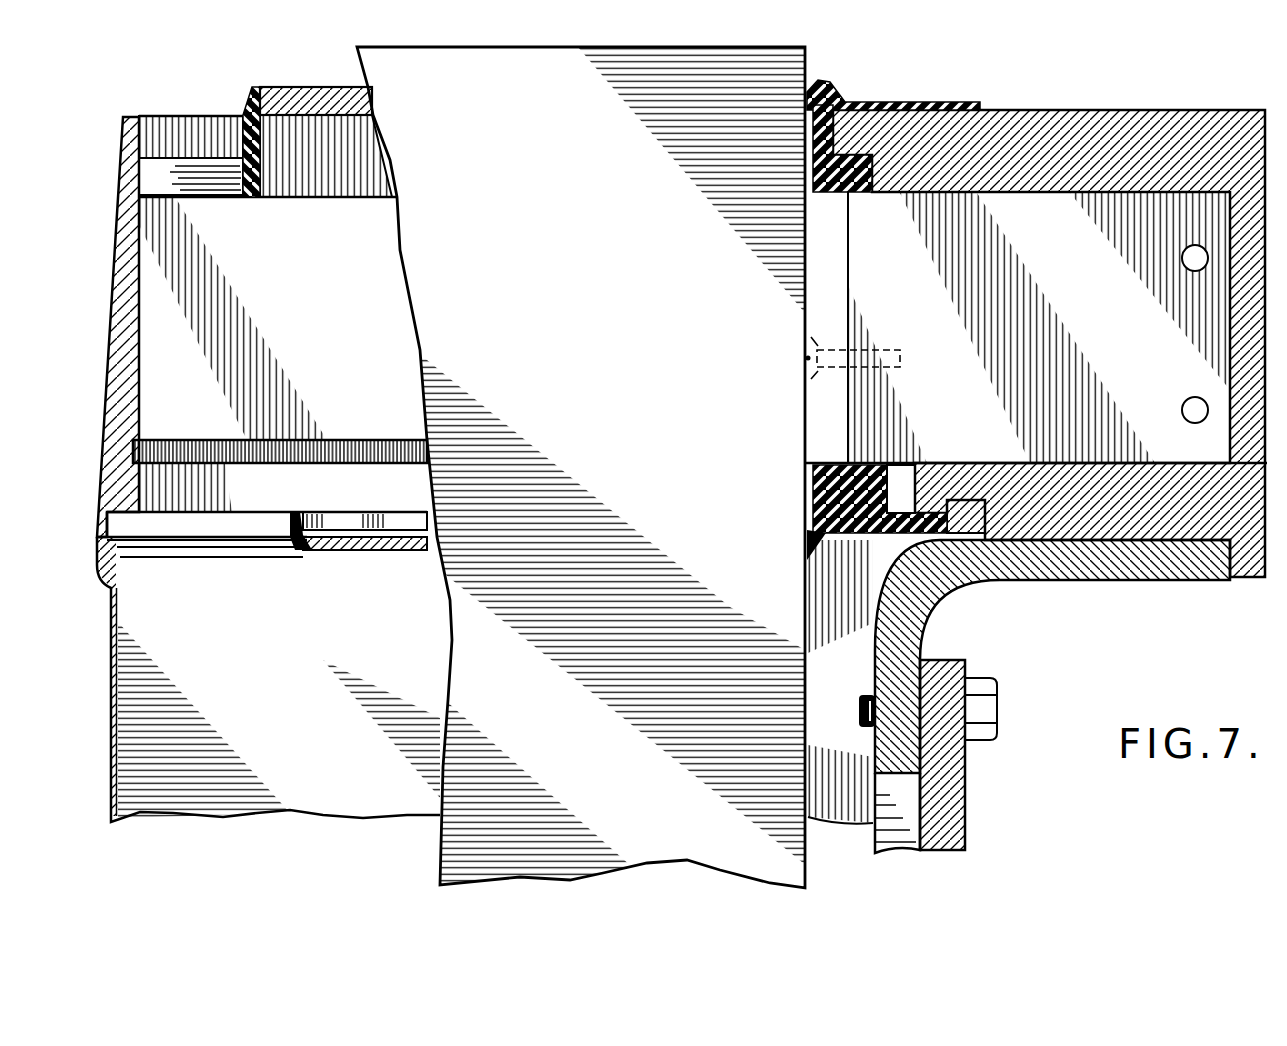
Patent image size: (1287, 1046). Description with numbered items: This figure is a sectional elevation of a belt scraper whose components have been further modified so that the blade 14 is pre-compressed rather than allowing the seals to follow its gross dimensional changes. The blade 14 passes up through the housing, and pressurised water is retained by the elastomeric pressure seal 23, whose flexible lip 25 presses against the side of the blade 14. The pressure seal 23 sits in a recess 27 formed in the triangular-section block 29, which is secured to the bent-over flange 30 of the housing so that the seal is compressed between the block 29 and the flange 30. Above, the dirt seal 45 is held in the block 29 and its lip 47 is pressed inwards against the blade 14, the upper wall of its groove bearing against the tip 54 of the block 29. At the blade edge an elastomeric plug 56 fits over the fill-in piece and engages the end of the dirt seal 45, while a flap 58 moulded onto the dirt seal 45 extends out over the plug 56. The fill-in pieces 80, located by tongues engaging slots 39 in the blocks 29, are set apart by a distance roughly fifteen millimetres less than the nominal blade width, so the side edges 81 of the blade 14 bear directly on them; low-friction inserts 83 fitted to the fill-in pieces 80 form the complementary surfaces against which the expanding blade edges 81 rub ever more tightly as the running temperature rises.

The blade 14 is at (673, 360).
The pressure seal 23 is at (415, 550).
The flexible lip 25 is at (352, 552).
The recess 27 is at (203, 524).
The block 29 is at (369, 308).
The bent-over flange 30 is at (200, 557).
The slots 39 is at (388, 455).
The dirt seal 45 is at (337, 168).
The lip 47 is at (291, 87).
The tip 54 is at (200, 119).
The plug 56 is at (1130, 120).
The flap 58 is at (937, 103).
The fill-in pieces 80 is at (1099, 295).
The side edges 81 is at (803, 596).
The inserts 83 is at (842, 247).